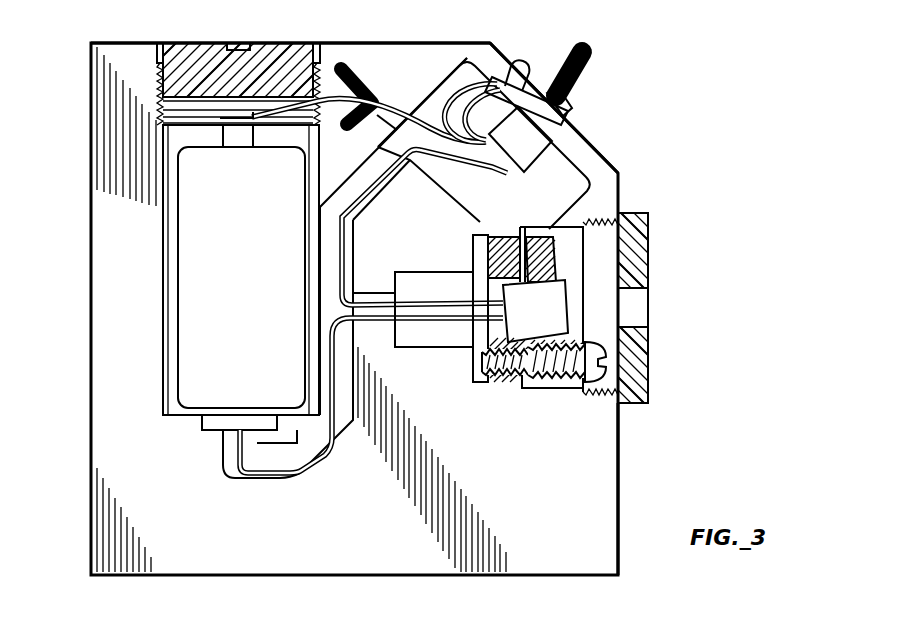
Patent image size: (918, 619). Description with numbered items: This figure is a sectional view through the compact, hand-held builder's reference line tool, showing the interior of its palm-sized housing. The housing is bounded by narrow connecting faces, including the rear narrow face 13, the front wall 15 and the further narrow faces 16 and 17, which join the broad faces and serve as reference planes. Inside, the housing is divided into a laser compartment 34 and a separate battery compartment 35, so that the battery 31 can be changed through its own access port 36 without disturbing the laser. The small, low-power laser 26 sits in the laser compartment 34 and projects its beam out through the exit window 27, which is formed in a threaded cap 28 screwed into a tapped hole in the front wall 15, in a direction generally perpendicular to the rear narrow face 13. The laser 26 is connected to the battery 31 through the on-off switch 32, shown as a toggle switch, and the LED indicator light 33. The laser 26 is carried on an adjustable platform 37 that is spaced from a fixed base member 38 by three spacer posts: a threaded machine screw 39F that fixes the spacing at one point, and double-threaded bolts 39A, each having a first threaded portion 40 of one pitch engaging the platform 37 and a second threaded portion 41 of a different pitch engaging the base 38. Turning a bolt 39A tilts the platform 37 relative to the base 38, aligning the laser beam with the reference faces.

The rear narrow face 13 is at (91, 267).
The front wall 15 is at (618, 468).
The narrow connecting face 16 is at (583, 130).
The narrow connecting face 17 is at (395, 43).
The laser 26 is at (550, 328).
The exit window 27 is at (637, 307).
The threaded cap 28 is at (650, 262).
The battery 31 is at (195, 360).
The on-off switch 32 is at (580, 48).
The LED indicator light 33 is at (520, 62).
The laser compartment 34 is at (563, 217).
The battery compartment 35 is at (168, 140).
The access port 36 is at (265, 55).
The adjustable platform 37 is at (553, 268).
The fixed base member 38 is at (487, 265).
The threaded machine screw 39F is at (518, 231).
The double-threaded bolt 39A is at (531, 390).
The first threaded portion 40 is at (580, 390).
The second threaded portion 41 is at (499, 387).